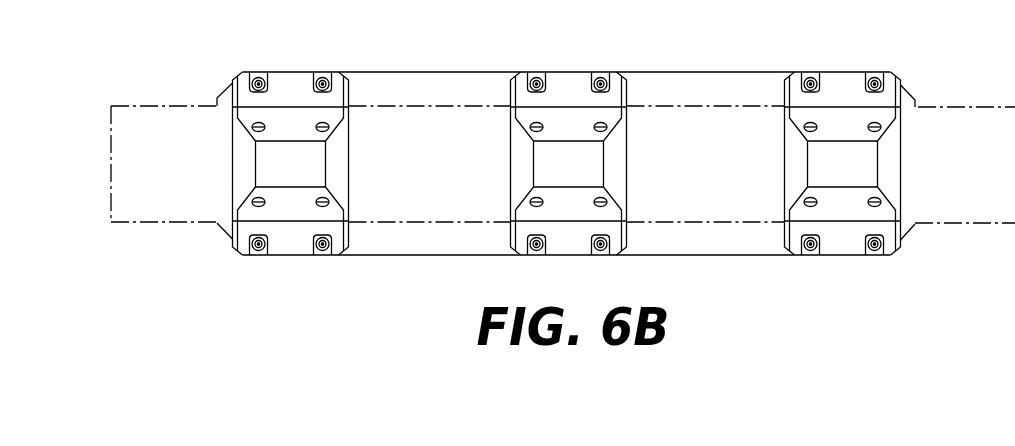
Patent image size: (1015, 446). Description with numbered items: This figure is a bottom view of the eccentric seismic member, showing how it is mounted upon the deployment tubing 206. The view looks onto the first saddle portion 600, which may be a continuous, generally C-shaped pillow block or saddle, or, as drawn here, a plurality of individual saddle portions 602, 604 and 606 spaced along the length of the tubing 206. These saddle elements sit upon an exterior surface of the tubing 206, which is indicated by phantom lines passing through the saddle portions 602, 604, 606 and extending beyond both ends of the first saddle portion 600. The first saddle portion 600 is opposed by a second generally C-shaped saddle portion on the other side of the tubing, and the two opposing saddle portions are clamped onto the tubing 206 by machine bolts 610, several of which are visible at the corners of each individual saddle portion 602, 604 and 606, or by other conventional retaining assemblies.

The deployment tubing 206 is at (975, 106).
The first saddle portion 600 is at (768, 58).
The individual saddle portion 602 is at (247, 72).
The individual saddle portion 604 is at (627, 73).
The individual saddle portion 606 is at (892, 257).
The machine bolts 610 is at (325, 73).